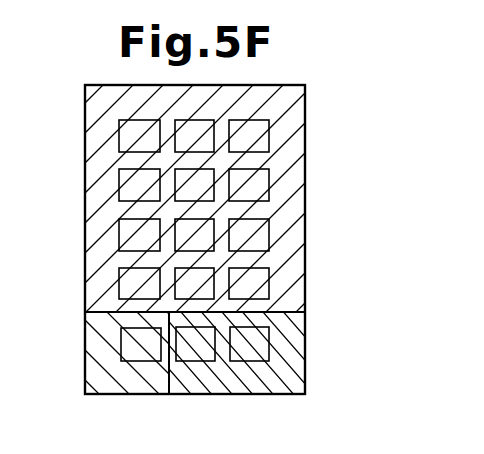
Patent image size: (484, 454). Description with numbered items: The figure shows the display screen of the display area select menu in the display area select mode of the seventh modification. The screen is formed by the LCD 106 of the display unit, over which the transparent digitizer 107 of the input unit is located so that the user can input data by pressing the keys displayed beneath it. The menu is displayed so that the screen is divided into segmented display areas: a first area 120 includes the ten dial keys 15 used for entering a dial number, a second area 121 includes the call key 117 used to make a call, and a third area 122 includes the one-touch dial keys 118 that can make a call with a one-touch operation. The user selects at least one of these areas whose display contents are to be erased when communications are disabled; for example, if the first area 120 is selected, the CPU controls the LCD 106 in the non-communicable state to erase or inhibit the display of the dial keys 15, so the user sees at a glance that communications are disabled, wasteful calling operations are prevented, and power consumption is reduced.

The digitizer 107 is at (306, 102).
The LCD 106 is at (236, 239).
The dial keys 15 is at (119, 229).
The first area 120 is at (293, 247).
The second area 121 is at (86, 362).
The third area 122 is at (295, 353).
The call key 117 is at (142, 357).
The one-touch dial keys 118 is at (199, 357).